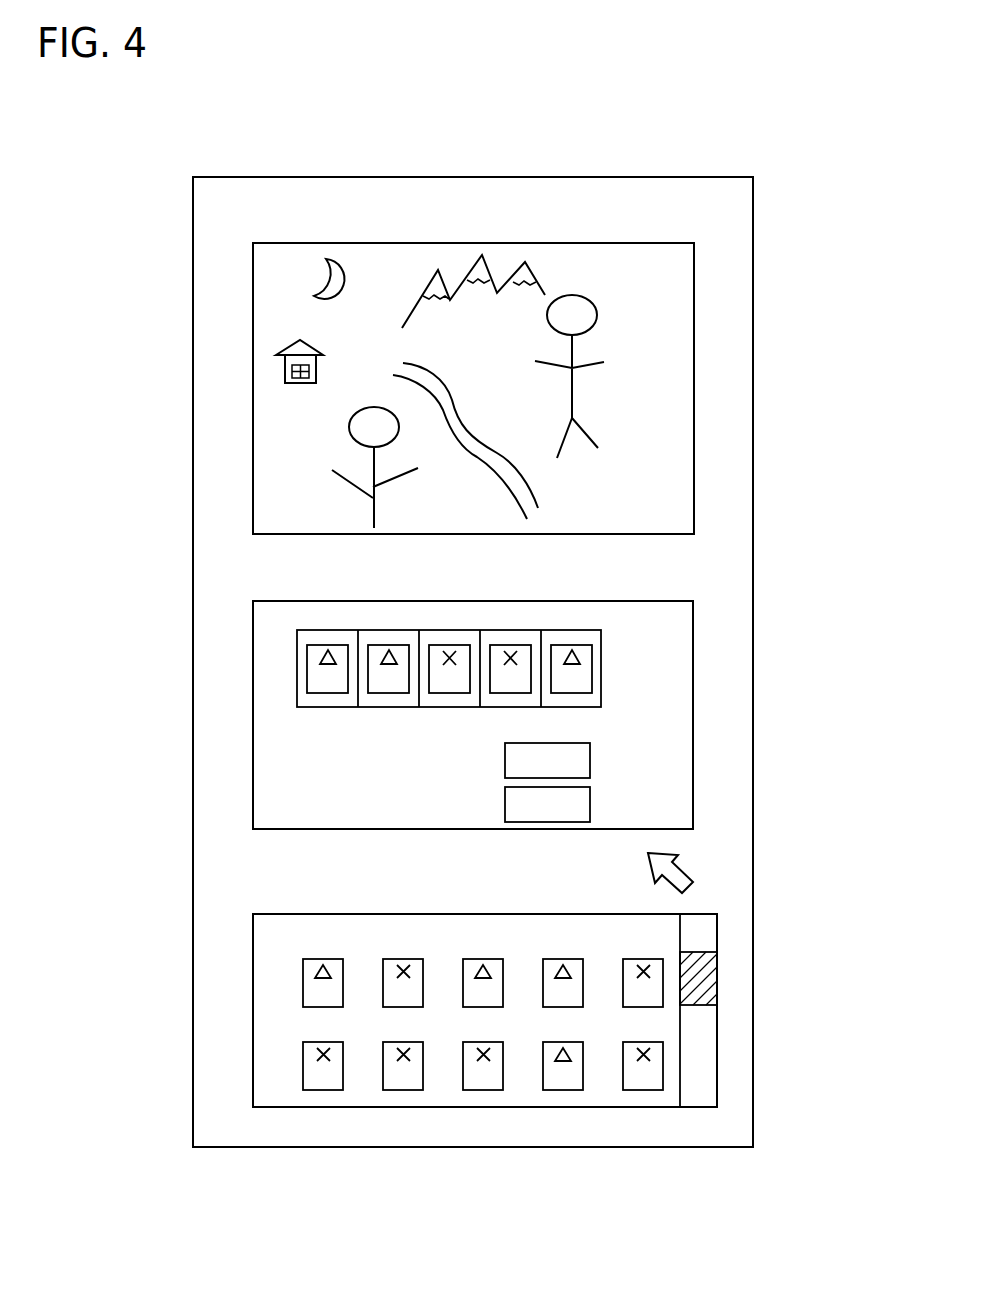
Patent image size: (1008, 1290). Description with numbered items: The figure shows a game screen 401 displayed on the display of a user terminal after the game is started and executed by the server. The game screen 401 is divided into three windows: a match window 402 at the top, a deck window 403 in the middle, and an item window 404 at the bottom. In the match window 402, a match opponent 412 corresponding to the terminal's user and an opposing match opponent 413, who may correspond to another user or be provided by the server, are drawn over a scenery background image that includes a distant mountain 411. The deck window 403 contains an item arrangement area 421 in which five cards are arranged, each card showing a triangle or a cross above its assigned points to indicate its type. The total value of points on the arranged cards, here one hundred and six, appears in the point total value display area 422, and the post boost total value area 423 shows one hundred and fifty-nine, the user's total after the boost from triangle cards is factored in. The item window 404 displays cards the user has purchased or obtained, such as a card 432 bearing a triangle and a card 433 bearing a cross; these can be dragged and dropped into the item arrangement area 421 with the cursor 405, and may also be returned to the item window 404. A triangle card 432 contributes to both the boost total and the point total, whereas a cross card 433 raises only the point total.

The game screen 401 is at (608, 177).
The match window 402 is at (694, 375).
The deck window 403 is at (693, 700).
The item window 404 is at (675, 912).
The cursor 405 is at (690, 873).
The distant mountain 411 is at (460, 285).
The match opponent 412 is at (372, 465).
The opposing match opponent 413 is at (597, 308).
The item arrangement area 421 is at (296, 665).
The point total value display area 422 is at (590, 759).
The post boost total value area 423 is at (590, 803).
The card 432 is at (303, 987).
The card 433 is at (403, 958).